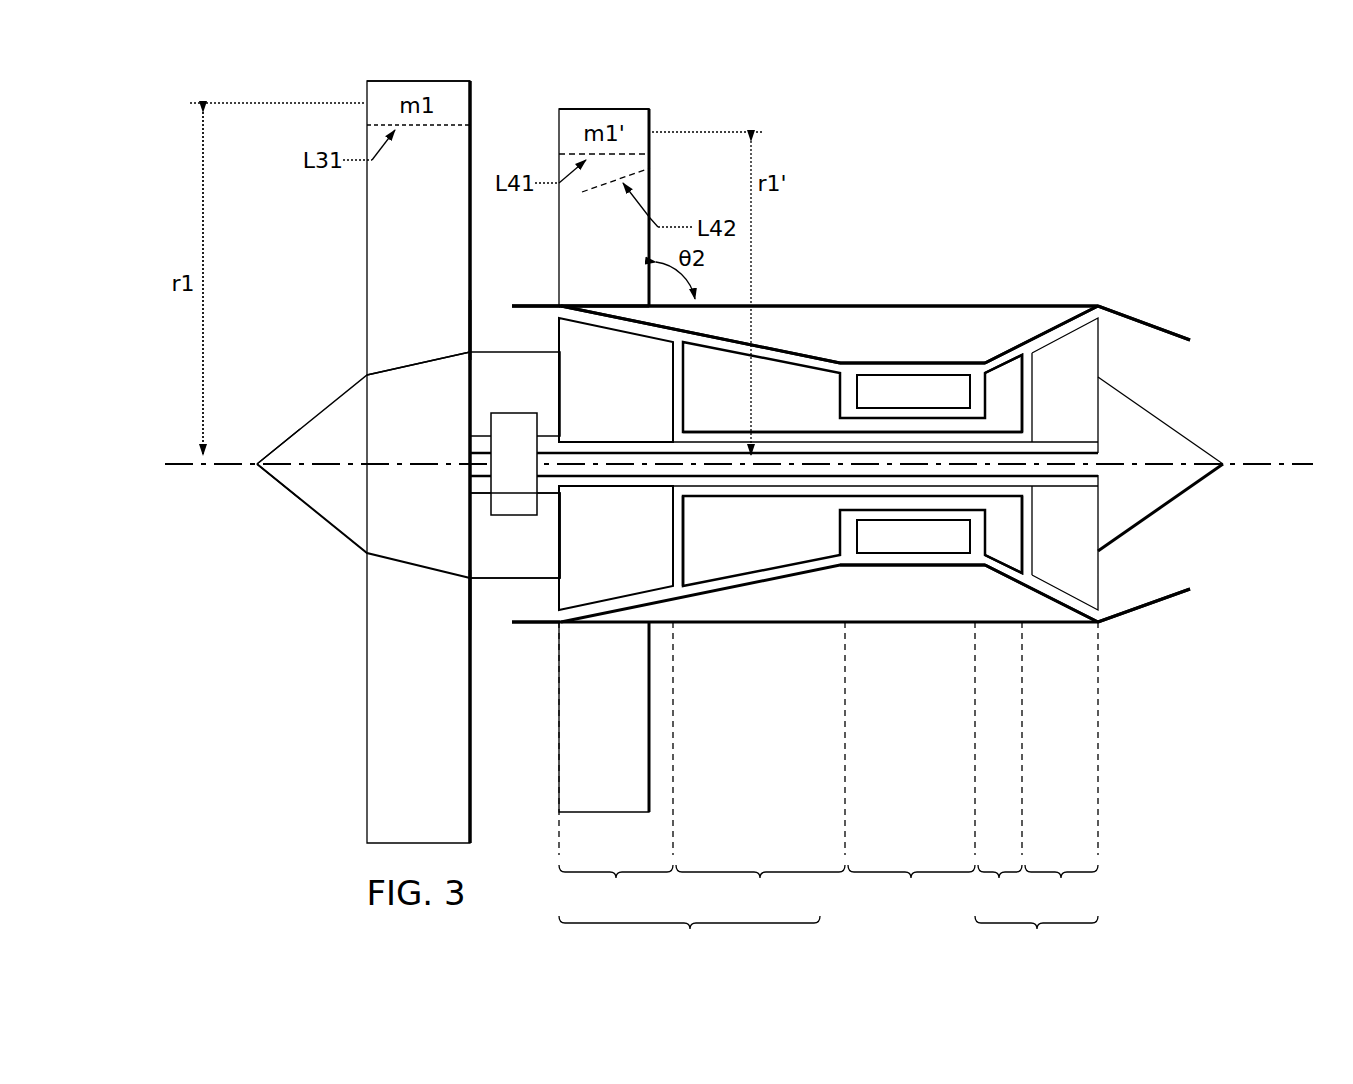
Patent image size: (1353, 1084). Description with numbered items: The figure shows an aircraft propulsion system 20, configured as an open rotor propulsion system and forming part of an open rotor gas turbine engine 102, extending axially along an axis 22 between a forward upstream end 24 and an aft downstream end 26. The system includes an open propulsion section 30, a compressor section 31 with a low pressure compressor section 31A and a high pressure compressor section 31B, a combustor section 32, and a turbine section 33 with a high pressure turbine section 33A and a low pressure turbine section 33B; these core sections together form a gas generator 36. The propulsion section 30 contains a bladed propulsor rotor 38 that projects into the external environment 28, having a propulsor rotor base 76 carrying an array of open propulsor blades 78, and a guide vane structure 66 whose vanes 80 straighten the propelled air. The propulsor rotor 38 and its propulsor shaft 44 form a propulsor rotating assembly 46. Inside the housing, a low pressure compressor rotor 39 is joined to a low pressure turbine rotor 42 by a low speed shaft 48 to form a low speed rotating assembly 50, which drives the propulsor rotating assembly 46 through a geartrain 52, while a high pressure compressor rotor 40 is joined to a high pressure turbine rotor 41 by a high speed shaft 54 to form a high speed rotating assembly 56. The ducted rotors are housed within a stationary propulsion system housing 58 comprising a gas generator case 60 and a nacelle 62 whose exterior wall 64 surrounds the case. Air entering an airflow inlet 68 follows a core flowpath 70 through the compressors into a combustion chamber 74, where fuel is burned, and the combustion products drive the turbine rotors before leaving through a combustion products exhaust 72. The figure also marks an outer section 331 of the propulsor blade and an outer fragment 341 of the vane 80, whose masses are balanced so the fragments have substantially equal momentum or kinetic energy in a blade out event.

The aircraft propulsion system 20 is at (140, 135).
The axis 22 is at (1282, 468).
The forward upstream end 24 is at (258, 476).
The aft downstream end 26 is at (1224, 457).
The external environment 28 is at (272, 272).
The open propulsion section 30 is at (491, 97).
The compressor section 31 is at (689, 939).
The low pressure compressor section 31A is at (616, 888).
The high pressure compressor section 31B is at (760, 888).
The combustor section 32 is at (911, 888).
The turbine section 33 is at (1036, 939).
The high pressure turbine section 33A is at (999, 888).
The low pressure turbine section 33B is at (1061, 888).
The gas generator 36 is at (883, 328).
The propulsor rotor 38 is at (363, 396).
The low pressure compressor rotor 39 is at (597, 393).
The high pressure compressor rotor 40 is at (779, 410).
The high pressure turbine rotor 41 is at (1004, 382).
The low pressure turbine rotor 42 is at (1049, 405).
The propulsor shaft 44 is at (480, 438).
The propulsor rotating assembly 46 is at (345, 428).
The low speed shaft 48 is at (717, 447).
The low speed rotating assembly 50 is at (548, 530).
The geartrain 52 is at (512, 425).
The high speed shaft 54 is at (903, 422).
The high speed rotating assembly 56 is at (678, 531).
The propulsion system housing 58 is at (1007, 276).
The gas generator case 60 is at (780, 348).
The nacelle 62 is at (819, 304).
The exterior wall 64 is at (771, 305).
The guide vane structure 66 is at (673, 110).
The airflow inlet 68 is at (488, 328).
The core flowpath 70 is at (513, 306).
The combustion products exhaust 72 is at (1226, 372).
The combustion chamber 74 is at (949, 390).
The propulsor rotor base 76 is at (402, 398).
The propulsor blades 78 is at (401, 233).
The vanes 80 is at (587, 258).
The open rotor gas turbine engine 102 is at (653, 316).
The outer section 331 is at (370, 95).
The outer fragment 341 is at (560, 130).